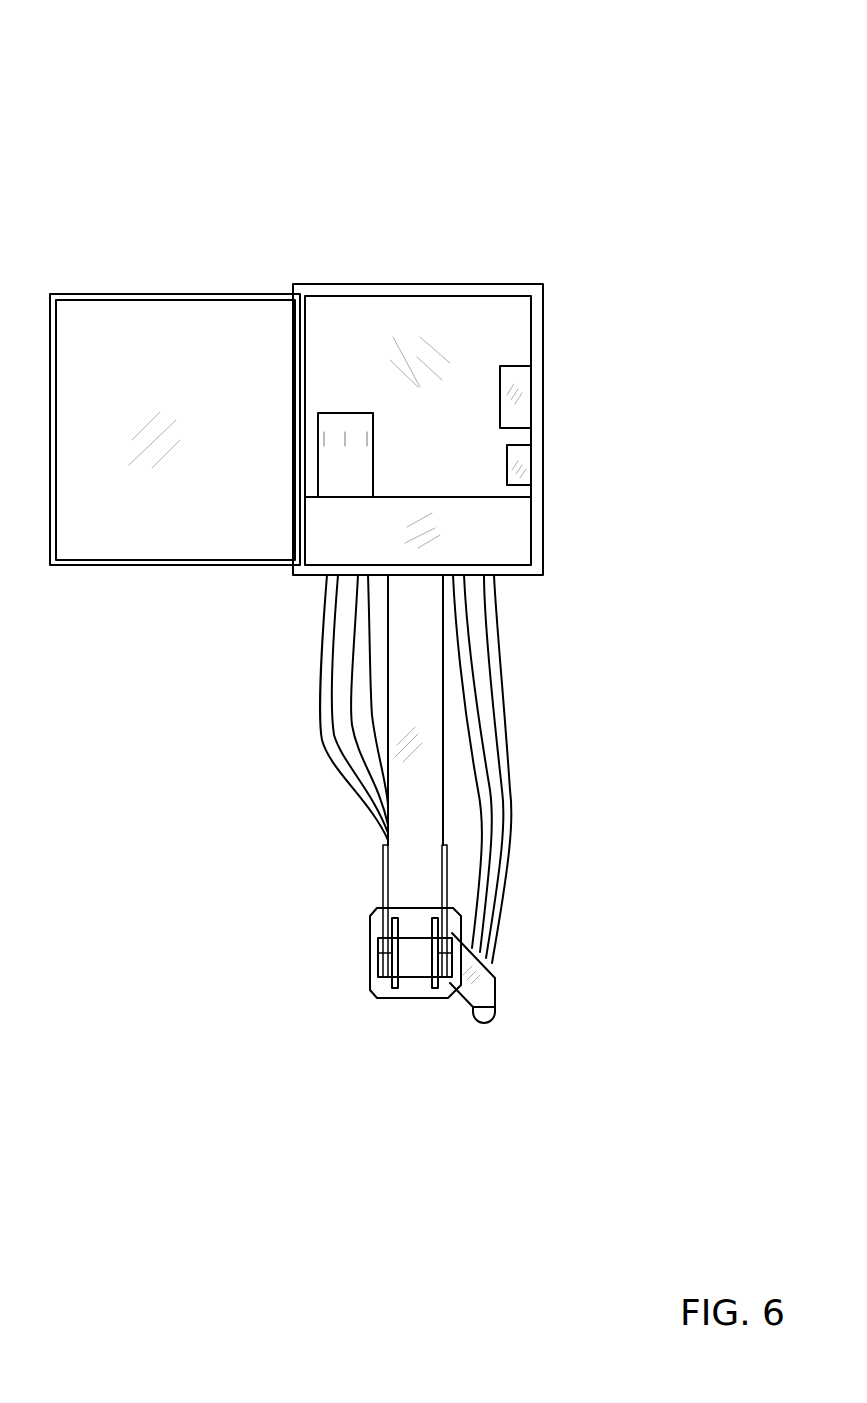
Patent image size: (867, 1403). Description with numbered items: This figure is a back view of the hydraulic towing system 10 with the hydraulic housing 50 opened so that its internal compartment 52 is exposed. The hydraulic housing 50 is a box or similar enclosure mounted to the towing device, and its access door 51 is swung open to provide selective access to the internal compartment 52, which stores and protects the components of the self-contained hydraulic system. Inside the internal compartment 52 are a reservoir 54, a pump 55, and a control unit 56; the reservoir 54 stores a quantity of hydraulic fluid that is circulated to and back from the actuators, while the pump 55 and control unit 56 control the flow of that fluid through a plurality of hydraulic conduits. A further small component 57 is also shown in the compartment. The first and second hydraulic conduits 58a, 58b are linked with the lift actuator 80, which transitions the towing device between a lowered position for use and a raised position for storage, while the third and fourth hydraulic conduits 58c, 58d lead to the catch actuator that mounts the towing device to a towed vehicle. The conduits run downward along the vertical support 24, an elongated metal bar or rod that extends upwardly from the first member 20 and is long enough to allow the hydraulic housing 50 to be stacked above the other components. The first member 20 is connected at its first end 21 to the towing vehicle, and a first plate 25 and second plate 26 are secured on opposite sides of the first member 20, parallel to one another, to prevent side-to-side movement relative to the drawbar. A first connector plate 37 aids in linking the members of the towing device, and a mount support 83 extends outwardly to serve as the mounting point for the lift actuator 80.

The hydraulic towing system 10 is at (584, 165).
The hydraulic housing 50 is at (340, 284).
The access door 51 is at (146, 294).
The internal compartment 52 is at (462, 328).
The reservoir 54 is at (493, 528).
The pump 55 is at (345, 477).
The control unit 56 is at (520, 380).
The connector 57 is at (522, 455).
The first hydraulic conduit 58a is at (495, 613).
The second hydraulic conduit 58b is at (470, 670).
The third hydraulic conduit 58c is at (325, 640).
The fourth hydraulic conduit 58d is at (350, 712).
The vertical support 24 is at (417, 805).
The first member 20 is at (415, 938).
The first end 21 is at (418, 950).
The first plate 25 is at (450, 955).
The second plate 26 is at (385, 952).
The first connector plate 37 is at (375, 995).
The mount support 83 is at (490, 987).
The lift actuator 80 is at (487, 1013).